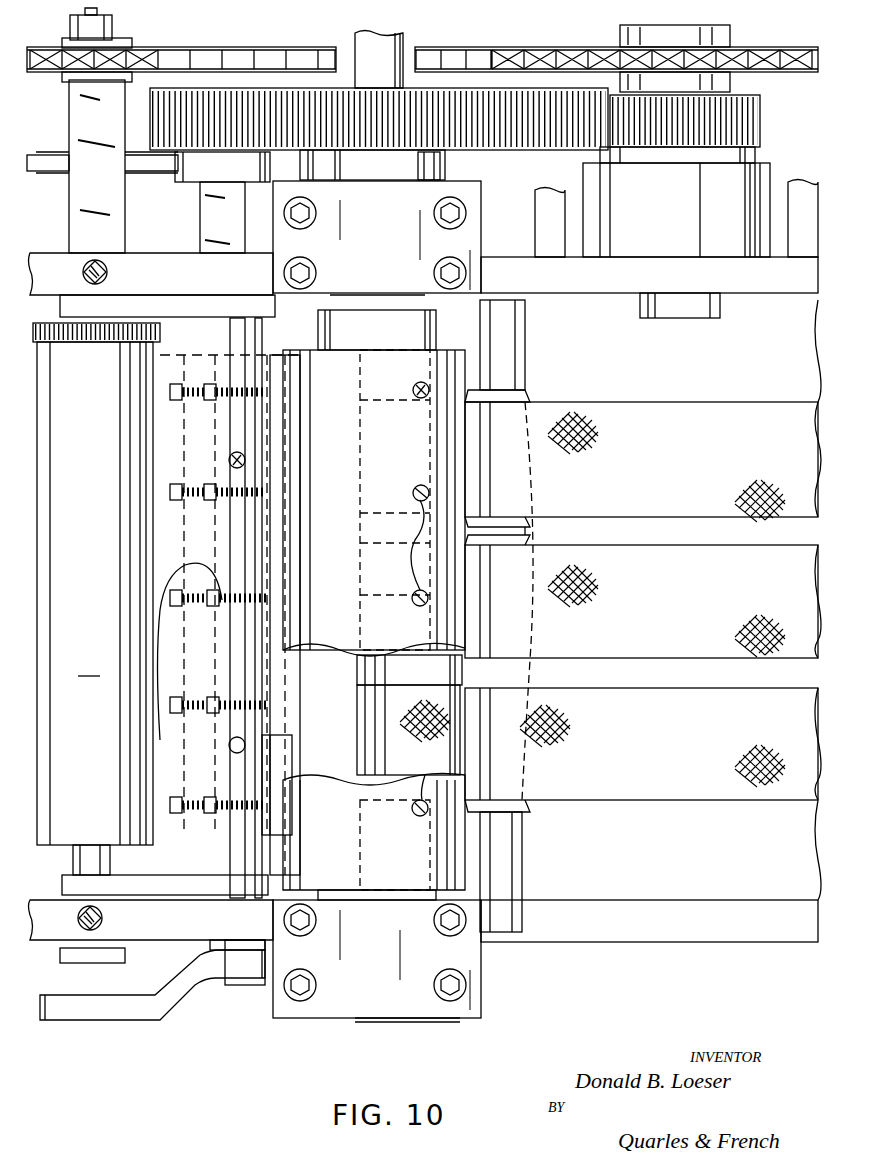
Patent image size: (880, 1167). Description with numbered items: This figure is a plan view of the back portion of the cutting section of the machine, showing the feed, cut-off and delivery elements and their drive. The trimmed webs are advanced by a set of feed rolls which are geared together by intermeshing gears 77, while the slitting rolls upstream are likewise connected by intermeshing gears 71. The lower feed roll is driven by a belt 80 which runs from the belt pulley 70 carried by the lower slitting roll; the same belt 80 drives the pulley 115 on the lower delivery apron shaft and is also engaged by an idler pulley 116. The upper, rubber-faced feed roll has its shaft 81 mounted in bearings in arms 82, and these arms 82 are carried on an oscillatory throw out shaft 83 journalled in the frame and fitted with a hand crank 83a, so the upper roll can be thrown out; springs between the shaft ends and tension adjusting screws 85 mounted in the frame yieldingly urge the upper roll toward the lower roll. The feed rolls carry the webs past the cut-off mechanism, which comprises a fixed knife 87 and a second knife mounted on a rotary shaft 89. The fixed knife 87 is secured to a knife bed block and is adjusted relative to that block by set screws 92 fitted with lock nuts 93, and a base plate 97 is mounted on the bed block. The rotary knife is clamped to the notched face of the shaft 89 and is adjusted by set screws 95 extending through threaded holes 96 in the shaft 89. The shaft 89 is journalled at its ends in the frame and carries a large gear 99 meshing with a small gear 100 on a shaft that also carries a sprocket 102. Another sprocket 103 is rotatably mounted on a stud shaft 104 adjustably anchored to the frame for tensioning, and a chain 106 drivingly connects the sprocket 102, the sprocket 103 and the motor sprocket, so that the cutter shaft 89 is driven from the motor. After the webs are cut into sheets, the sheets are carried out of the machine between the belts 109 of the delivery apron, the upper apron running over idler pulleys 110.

The belt pulley 70 is at (55, 152).
The intermeshing gears 71 is at (89, 666).
The intermeshing gears 77 is at (95, 343).
The belt 80 is at (58, 170).
The shaft 81 is at (88, 295).
The arms 82 is at (165, 298).
The oscillatory throw out shaft 83 is at (258, 863).
The hand crank 83a is at (135, 1018).
The tension adjusting screws 85 is at (98, 262).
The fixed knife 87 is at (298, 678).
The rotary shaft 89 is at (372, 78).
The set screws 92 is at (172, 398).
The lock nuts 93 is at (200, 562).
The set screws 95 is at (410, 395).
The threaded holes 96 is at (420, 535).
The base plate 97 is at (278, 737).
The large gear 99 is at (514, 150).
The small gear 100 is at (760, 108).
The sprocket 102 is at (768, 45).
The sprocket 103 is at (150, 47).
The stud shaft 104 is at (115, 12).
The chain 106 is at (470, 48).
The belts 109 is at (690, 552).
The idler pulleys 110 is at (532, 536).
The pulley 115 is at (438, 155).
The idler pulley 116 is at (198, 170).